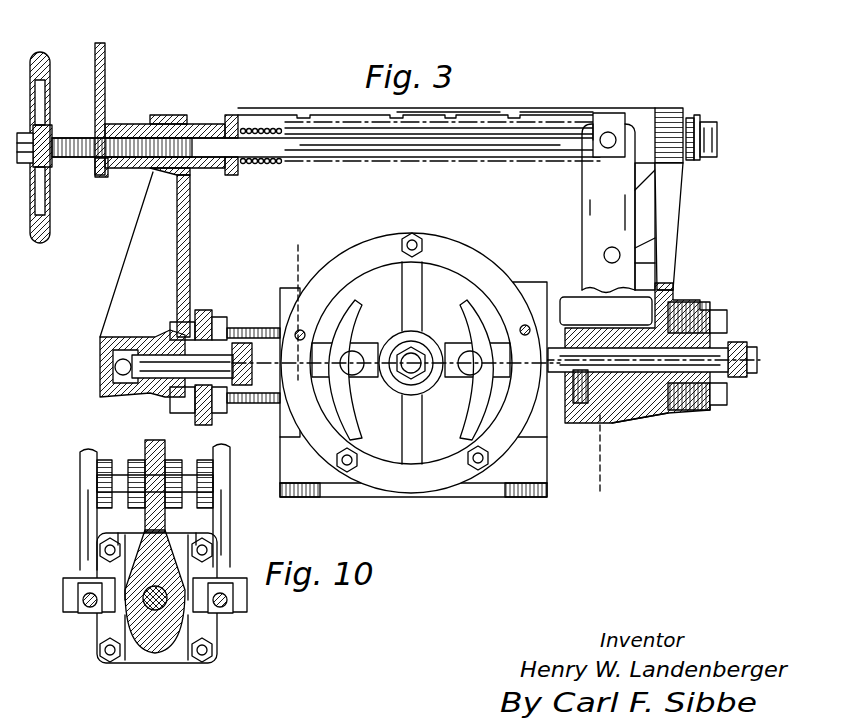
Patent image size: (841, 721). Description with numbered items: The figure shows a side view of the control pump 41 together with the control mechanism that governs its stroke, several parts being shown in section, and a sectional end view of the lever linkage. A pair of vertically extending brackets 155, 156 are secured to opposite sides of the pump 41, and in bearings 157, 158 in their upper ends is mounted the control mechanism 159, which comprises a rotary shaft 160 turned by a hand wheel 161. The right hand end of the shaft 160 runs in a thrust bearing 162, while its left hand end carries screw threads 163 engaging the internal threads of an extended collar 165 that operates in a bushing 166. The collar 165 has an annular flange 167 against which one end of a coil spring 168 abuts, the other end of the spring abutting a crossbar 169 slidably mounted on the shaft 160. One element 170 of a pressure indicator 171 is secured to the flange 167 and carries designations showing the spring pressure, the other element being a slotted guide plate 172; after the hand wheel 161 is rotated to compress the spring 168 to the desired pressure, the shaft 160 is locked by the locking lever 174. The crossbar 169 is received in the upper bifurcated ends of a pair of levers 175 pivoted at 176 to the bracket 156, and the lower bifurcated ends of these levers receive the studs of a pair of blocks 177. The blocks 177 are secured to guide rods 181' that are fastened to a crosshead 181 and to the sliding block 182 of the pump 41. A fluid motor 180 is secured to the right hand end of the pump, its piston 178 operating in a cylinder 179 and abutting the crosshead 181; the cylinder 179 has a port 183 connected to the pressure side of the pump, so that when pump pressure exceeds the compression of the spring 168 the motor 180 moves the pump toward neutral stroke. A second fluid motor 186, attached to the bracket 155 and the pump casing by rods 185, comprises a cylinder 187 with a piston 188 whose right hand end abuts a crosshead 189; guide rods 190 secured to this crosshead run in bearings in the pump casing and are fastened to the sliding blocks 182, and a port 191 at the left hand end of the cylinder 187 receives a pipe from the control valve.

In FIG. 3, the control pump 41 is at (455, 250).
In FIG. 3, the bracket 155 is at (191, 237).
In FIG. 3, the bracket 156 is at (675, 192).
In FIG. 10, the bracket 156 is at (144, 443).
In FIG. 3, the bearing 157 is at (185, 115).
In FIG. 3, the bearing 158 is at (672, 112).
In FIG. 3, the control mechanism 159 is at (335, 143).
In FIG. 3, the rotary shaft 160 is at (412, 140).
In FIG. 3, the hand wheel 161 is at (46, 58).
In FIG. 3, the thrust bearing 162 is at (700, 120).
In FIG. 3, the screw threads 163 is at (120, 160).
In FIG. 3, the extended collar 165 is at (233, 112).
In FIG. 3, the bushing 166 is at (197, 166).
In FIG. 3, the annular flange 167 is at (240, 170).
In FIG. 3, the coil spring 168 is at (280, 162).
In FIG. 3, the crossbar 169 is at (608, 120).
In FIG. 3, the indicator element 170 is at (262, 110).
In FIG. 3, the pressure indicator 171 is at (505, 108).
In FIG. 3, the guide plate 172 is at (447, 110).
In FIG. 3, the locking lever 174 is at (105, 84).
In FIG. 3, the levers 175 is at (592, 187).
In FIG. 10, the levers 175 is at (80, 530).
In FIG. 3, the pivot 176 is at (622, 255).
In FIG. 10, the pivot 176 is at (80, 485).
In FIG. 3, the blocks 177 is at (604, 464).
In FIG. 10, the blocks 177 is at (88, 615).
In FIG. 3, the piston 178 is at (665, 413).
In FIG. 10, the piston 178 is at (172, 622).
In FIG. 3, the cylinder 179 is at (648, 420).
In FIG. 3, the fluid motor 180 is at (605, 425).
In FIG. 3, the crosshead 181 is at (714, 375).
In FIG. 10, the guide rods 181' is at (151, 620).
In FIG. 3, the sliding block 182 is at (330, 402).
In FIG. 3, the port 183 is at (580, 405).
In FIG. 10, the port 183 is at (155, 645).
In FIG. 3, the rods 185 is at (256, 326).
In FIG. 3, the second fluid motor 186 is at (178, 399).
In FIG. 3, the cylinder 187 is at (150, 333).
In FIG. 3, the piston 188 is at (125, 381).
In FIG. 3, the crosshead 189 is at (242, 342).
In FIG. 3, the guide rods 190 is at (302, 311).
In FIG. 3, the port 191 is at (112, 366).